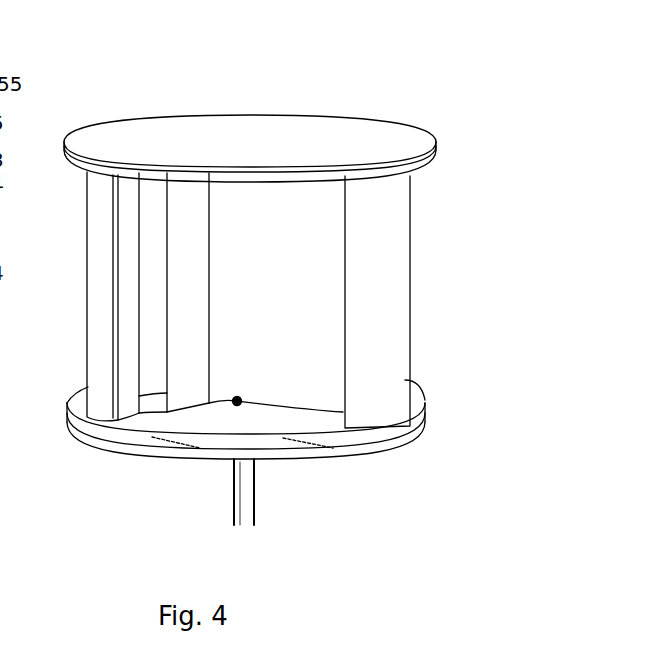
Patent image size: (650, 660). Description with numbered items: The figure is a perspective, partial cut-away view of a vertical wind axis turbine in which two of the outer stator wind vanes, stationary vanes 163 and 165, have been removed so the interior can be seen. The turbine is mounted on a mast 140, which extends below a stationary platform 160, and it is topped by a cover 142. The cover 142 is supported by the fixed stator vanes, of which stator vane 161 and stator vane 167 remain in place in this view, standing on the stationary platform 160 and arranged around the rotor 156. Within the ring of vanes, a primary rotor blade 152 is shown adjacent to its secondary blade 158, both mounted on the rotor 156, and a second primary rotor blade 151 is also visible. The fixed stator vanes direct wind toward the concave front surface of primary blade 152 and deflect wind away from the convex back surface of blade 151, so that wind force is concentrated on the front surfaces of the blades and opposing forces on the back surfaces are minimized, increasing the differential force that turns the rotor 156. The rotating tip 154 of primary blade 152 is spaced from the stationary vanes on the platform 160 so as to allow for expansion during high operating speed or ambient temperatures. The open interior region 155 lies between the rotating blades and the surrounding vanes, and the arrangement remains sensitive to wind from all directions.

The mast 140 is at (232, 490).
The cover 142 is at (258, 146).
The primary rotor blade 151 is at (314, 287).
The primary rotor blade 152 is at (152, 215).
The rotating tip 154 is at (138, 333).
The interior chamber 155 is at (255, 215).
The rotor 156 is at (256, 418).
The secondary blade 158 is at (183, 201).
The stationary platform 160 is at (272, 458).
The fixed stator vane 161 is at (386, 227).
The fixed stator vane 163 is at (316, 447).
The fixed stator vane 165 is at (155, 438).
The fixed stator vane 167 is at (98, 268).